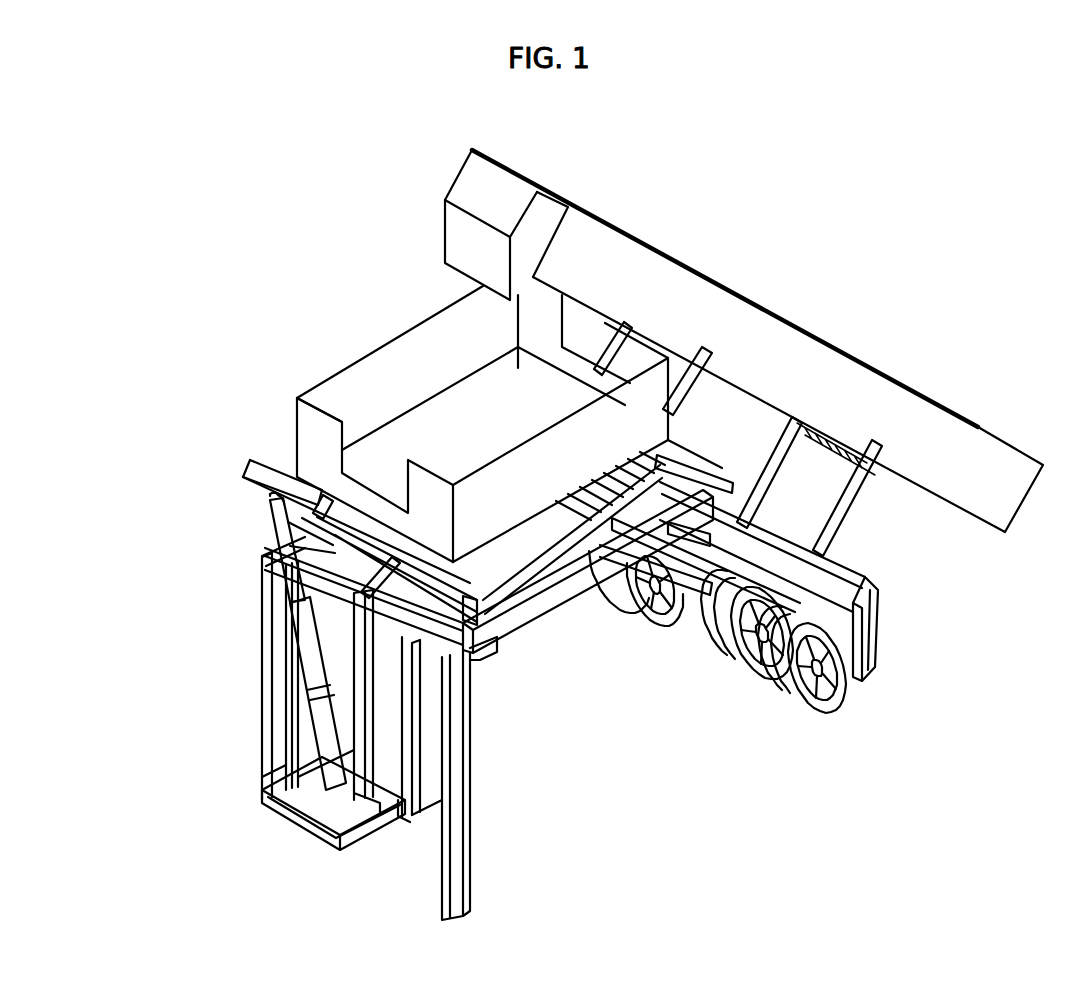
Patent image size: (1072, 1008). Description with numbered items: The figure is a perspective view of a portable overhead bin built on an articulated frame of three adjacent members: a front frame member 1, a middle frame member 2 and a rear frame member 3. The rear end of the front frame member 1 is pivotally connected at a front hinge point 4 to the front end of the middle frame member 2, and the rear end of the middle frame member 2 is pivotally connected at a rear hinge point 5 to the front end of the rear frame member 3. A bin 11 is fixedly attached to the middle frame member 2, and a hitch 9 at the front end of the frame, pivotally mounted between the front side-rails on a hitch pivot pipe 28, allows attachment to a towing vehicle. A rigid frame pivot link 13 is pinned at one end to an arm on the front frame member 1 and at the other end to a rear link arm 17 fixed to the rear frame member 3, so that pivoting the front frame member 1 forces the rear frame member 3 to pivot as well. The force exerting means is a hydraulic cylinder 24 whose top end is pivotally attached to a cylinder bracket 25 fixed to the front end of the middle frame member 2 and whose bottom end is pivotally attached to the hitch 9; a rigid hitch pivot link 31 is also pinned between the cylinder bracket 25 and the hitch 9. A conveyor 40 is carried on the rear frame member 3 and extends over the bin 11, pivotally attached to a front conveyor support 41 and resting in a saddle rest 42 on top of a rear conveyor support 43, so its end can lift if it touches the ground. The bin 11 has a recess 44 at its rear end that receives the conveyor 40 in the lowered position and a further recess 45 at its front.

The front frame member 1 is at (466, 790).
The middle frame member 2 is at (545, 605).
The rear frame member 3 is at (866, 578).
The front hinge point 4 is at (479, 660).
The rear hinge point 5 is at (690, 498).
The hitch 9 is at (325, 812).
The bin 11 is at (392, 383).
The frame pivot link 13 is at (542, 598).
The rear link arm 17 is at (698, 458).
The hydraulic cylinder 24 is at (325, 722).
The cylinder bracket 25 is at (257, 462).
The hitch pivot pipe 28 is at (398, 805).
The hitch pivot link 31 is at (300, 717).
The conveyor 40 is at (683, 288).
The front conveyor support 41 is at (697, 390).
The saddle rest 42 is at (830, 443).
The rear conveyor support 43 is at (863, 492).
The recess 44 is at (587, 335).
The recess 45 is at (296, 399).